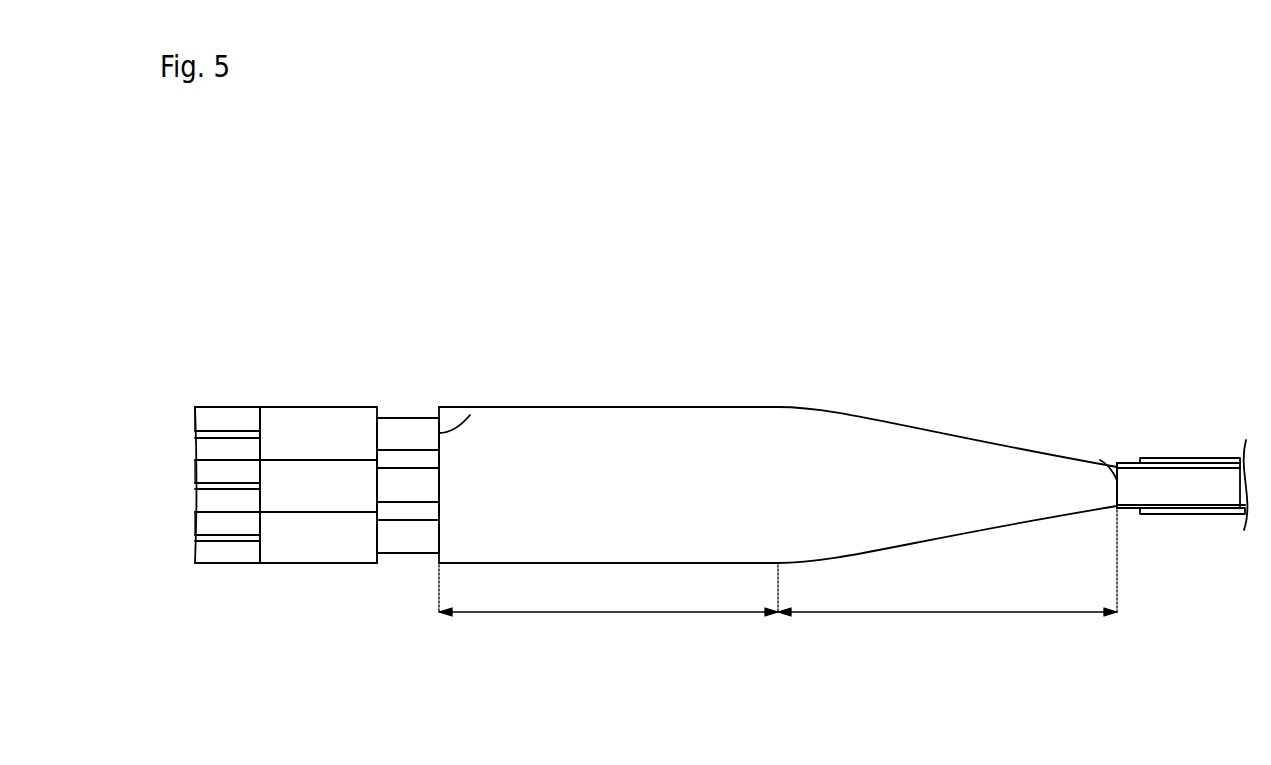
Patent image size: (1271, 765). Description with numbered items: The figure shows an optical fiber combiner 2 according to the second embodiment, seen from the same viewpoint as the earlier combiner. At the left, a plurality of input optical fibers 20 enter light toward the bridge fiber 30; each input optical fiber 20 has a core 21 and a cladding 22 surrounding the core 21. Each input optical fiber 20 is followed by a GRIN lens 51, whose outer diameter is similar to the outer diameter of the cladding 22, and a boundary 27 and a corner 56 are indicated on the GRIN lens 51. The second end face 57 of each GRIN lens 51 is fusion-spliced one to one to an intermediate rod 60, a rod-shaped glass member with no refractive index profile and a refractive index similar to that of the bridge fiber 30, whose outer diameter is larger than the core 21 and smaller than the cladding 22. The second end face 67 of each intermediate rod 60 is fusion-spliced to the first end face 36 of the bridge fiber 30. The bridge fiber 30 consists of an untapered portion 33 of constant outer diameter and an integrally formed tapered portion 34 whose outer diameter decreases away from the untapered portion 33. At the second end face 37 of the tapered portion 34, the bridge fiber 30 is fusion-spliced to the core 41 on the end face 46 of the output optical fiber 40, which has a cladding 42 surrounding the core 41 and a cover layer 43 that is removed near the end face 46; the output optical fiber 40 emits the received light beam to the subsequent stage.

The optical fiber combiner 2 is at (990, 280).
The input optical fiber 20 is at (191, 452).
The core 21 is at (197, 435).
The cladding 22 is at (200, 419).
The end face of holding member 27 is at (263, 420).
The bridge fiber 30 is at (730, 410).
The untapered portion 33 is at (608, 601).
The tapered portion 34 is at (947, 574).
The first end face 36 is at (437, 512).
The second end face 37 is at (1122, 510).
The output optical fiber 40 is at (1210, 457).
The core 41 is at (1145, 475).
The cladding 42 is at (1158, 466).
The cover layer 43 is at (1187, 458).
The end face 46 is at (1102, 462).
The GRIN lens 51 is at (302, 417).
The corner of holding member 56 is at (267, 552).
The second end face 57 is at (372, 555).
The intermediate rod 60 is at (388, 418).
The second end face 67 is at (470, 415).